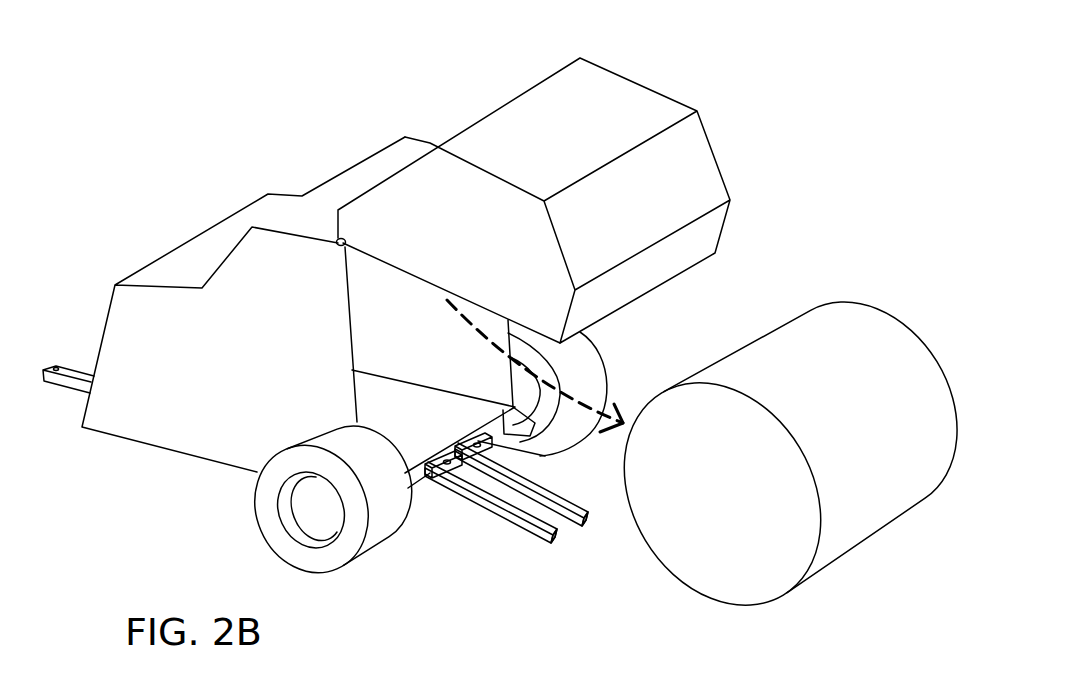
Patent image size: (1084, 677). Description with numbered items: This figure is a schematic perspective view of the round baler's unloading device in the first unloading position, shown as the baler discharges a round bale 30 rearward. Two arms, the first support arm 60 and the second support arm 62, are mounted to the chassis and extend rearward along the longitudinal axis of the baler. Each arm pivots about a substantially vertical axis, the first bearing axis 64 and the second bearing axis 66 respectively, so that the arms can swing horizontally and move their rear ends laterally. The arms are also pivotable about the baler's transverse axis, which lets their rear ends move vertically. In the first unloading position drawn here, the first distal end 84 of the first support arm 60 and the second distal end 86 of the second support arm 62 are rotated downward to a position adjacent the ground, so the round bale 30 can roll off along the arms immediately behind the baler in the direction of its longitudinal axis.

The round bale 30 is at (853, 363).
The first support arm 60 is at (530, 518).
The second support arm 62 is at (565, 502).
The first bearing axis 64 is at (447, 460).
The second bearing axis 66 is at (477, 443).
The first distal end 84 is at (553, 540).
The second distal end 86 is at (587, 523).